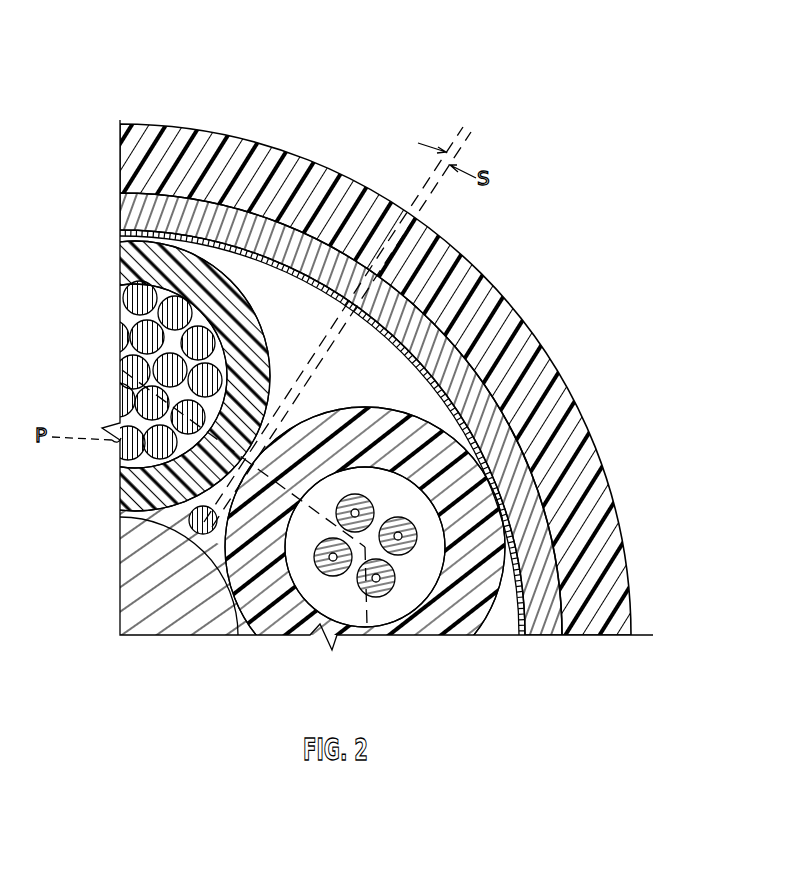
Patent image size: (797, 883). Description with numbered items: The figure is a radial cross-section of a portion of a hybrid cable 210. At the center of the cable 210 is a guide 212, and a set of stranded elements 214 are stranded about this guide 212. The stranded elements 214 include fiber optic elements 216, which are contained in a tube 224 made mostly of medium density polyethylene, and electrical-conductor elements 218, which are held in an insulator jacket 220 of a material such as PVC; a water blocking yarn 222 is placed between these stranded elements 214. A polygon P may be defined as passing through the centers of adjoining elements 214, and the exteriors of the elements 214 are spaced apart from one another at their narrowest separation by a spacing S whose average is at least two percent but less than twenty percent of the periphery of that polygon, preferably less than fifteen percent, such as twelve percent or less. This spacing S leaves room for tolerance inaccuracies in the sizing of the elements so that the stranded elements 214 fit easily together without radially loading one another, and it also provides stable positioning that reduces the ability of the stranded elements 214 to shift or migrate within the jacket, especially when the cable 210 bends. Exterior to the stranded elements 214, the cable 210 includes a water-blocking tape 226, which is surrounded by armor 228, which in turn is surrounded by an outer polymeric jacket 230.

The hybrid cable 210 is at (614, 202).
The guide 212 is at (160, 608).
The stranded elements 214 is at (210, 296).
The fiber optic elements 216 is at (384, 590).
The electrical-conductor elements 218 is at (137, 313).
The insulator jacket 220 is at (122, 497).
The water blocking yarn 222 is at (197, 523).
The tube 224 is at (457, 604).
The water-blocking tape 226 is at (120, 232).
The armor 228 is at (550, 604).
The polymeric jacket 230 is at (620, 557).